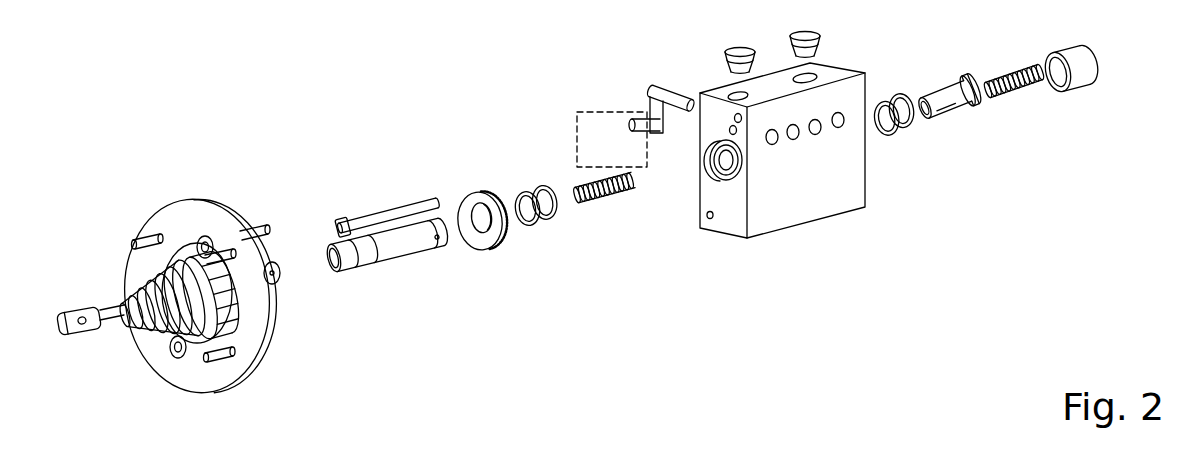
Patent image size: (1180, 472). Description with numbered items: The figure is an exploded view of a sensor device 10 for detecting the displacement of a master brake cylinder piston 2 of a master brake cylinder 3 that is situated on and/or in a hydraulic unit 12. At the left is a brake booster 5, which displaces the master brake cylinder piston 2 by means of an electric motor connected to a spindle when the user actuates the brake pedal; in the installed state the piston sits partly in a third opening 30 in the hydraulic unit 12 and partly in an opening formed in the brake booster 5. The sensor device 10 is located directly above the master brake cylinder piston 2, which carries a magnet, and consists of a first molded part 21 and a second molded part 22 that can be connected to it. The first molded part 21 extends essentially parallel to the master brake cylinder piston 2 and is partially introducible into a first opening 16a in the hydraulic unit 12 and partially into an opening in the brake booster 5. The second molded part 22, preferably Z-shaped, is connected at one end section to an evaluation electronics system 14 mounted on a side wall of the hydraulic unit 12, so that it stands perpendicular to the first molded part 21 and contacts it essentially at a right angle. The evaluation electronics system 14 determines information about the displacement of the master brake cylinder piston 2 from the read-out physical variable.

The sensor device 10 is at (315, 189).
The brake booster 5 is at (223, 377).
The master brake cylinder piston 2 is at (350, 250).
The first molded part 21 is at (382, 215).
The master brake cylinder 3 is at (660, 227).
The evaluation electronics system 14 is at (575, 135).
The second molded part 22 is at (667, 92).
The hydraulic unit 12 is at (840, 190).
The third opening 30 is at (703, 177).
The first opening 16a is at (736, 134).